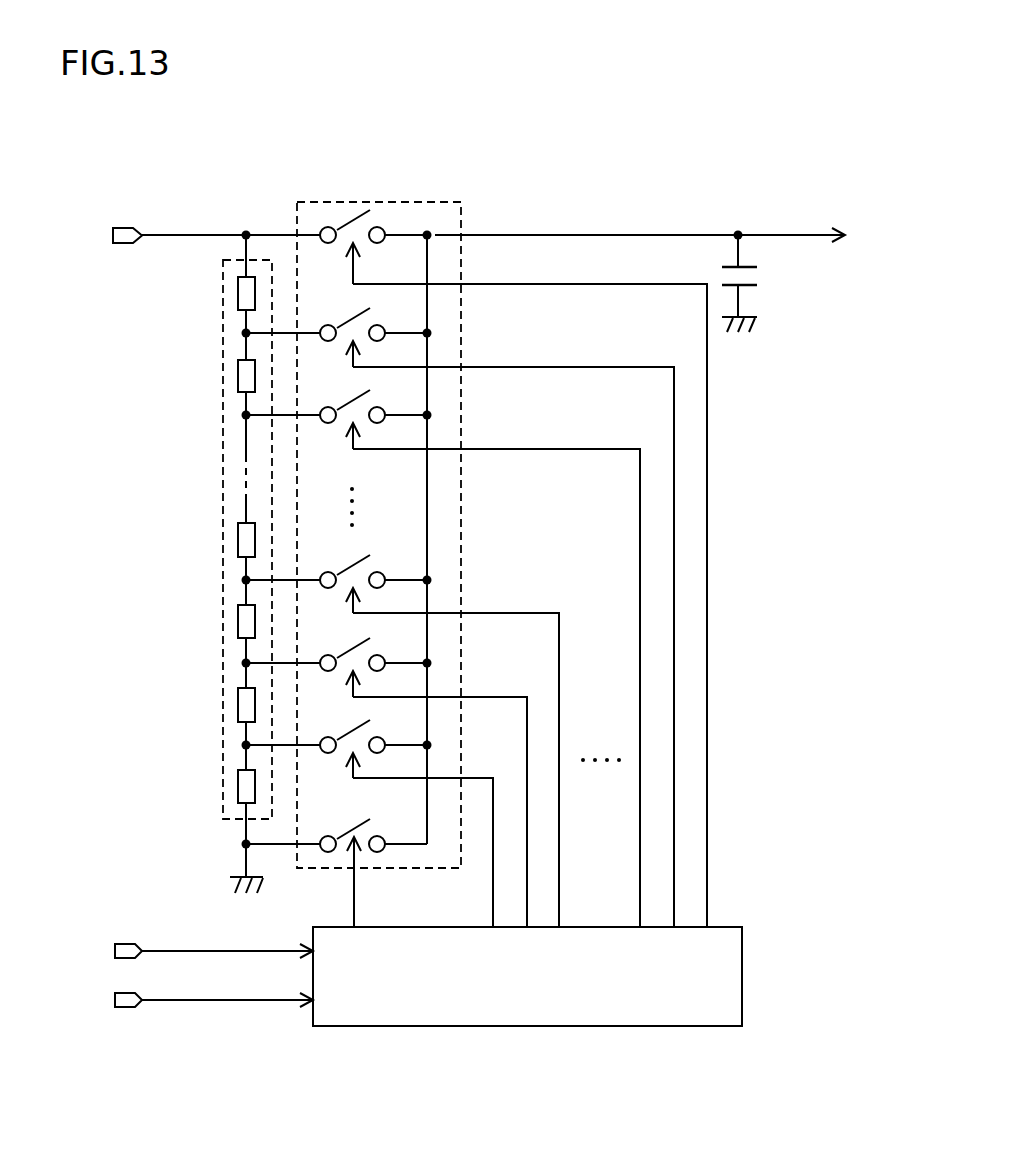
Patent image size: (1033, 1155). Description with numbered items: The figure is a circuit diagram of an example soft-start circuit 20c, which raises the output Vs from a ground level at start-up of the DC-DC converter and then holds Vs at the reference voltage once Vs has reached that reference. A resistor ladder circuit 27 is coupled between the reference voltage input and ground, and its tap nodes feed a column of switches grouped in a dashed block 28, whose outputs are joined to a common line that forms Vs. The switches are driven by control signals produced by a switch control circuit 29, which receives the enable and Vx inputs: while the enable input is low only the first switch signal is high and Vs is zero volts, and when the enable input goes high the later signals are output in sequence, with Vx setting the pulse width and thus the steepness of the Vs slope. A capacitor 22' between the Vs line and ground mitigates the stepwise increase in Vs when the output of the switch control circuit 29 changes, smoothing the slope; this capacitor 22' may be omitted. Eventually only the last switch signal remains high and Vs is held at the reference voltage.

The soft-start circuit 20c is at (705, 110).
The capacitor 22' is at (767, 283).
The resistor ladder circuit 27 is at (222, 312).
The switch group 28 is at (372, 202).
The switch control circuit 29 is at (520, 1026).